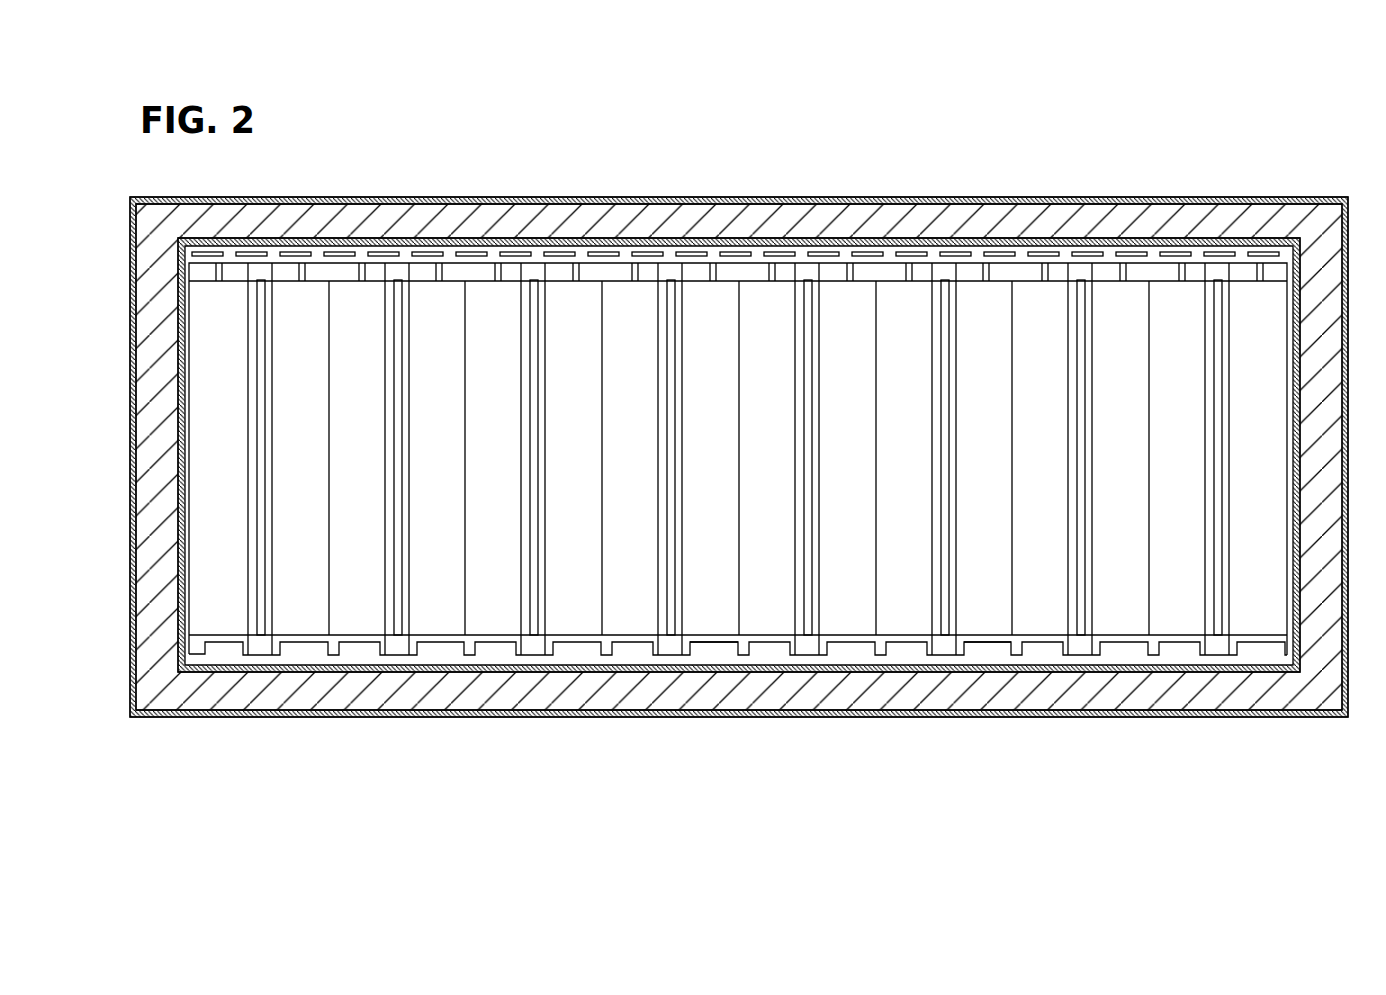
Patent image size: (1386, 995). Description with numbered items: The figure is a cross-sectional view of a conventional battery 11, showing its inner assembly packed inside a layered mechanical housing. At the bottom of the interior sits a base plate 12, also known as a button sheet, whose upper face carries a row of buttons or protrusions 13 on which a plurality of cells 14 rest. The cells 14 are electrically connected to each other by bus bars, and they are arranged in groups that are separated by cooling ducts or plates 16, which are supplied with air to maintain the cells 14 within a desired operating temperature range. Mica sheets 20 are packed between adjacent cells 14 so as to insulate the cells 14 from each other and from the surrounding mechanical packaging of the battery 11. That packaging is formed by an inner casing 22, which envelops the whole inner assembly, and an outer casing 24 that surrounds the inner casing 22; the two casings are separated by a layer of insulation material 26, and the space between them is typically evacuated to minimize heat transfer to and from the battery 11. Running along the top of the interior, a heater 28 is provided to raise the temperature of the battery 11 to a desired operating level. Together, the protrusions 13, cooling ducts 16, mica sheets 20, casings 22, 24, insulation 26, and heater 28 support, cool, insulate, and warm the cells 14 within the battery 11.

The conventional battery 11 is at (982, 84).
The base plate 12 is at (230, 641).
The protrusions 13 is at (985, 643).
The cells 14 is at (348, 300).
The cooling ducts 16 is at (396, 620).
The mica sheets 20 is at (247, 365).
The inner casing 22 is at (947, 243).
The outer casing 24 is at (1141, 196).
The layer of insulation material 26 is at (1322, 225).
The heater 28 is at (757, 250).